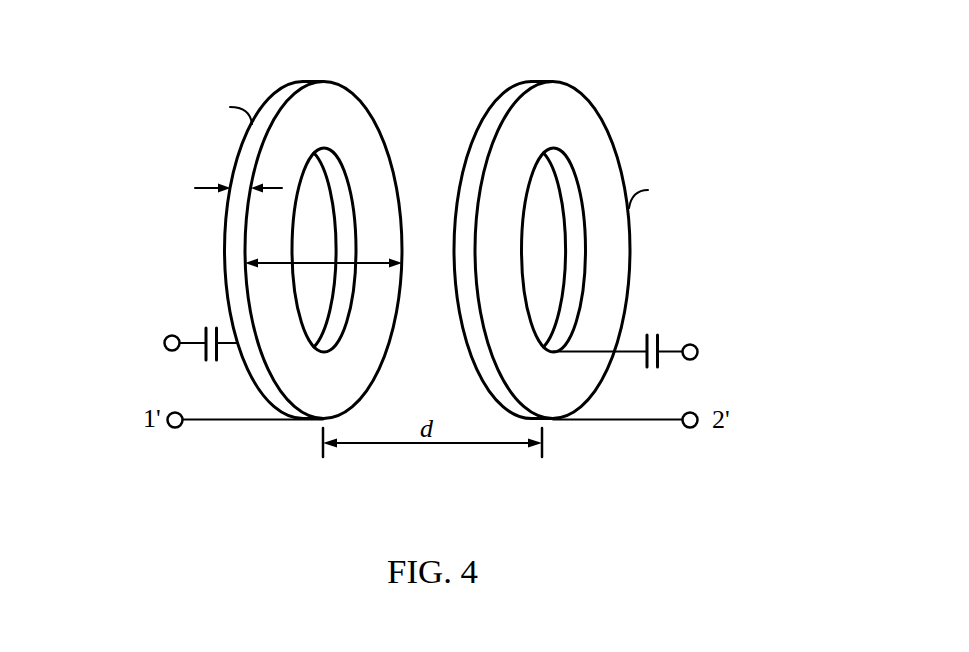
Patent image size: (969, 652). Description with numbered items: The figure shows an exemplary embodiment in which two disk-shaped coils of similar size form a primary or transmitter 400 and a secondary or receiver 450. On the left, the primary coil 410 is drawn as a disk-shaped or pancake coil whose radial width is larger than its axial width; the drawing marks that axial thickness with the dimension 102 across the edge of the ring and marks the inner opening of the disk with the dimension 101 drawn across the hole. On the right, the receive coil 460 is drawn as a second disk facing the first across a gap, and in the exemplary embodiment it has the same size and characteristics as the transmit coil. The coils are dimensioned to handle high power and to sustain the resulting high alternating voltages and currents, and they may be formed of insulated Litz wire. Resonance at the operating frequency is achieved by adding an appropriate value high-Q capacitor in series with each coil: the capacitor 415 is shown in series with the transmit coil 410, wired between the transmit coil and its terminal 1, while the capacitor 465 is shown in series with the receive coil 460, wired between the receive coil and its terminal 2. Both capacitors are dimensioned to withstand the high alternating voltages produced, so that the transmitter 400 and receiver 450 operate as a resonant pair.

The primary or transmitter 400 is at (310, 24).
The primary coil 410 is at (362, 132).
The coil thickness 102 is at (236, 186).
The coil diameter 101 is at (323, 263).
The capacitor 415 is at (206, 362).
The secondary or receiver 450 is at (559, 24).
The receive coil 460 is at (585, 133).
The capacitor 465 is at (657, 367).
The primary terminal 1 is at (175, 343).
The secondary terminal 2 is at (692, 353).